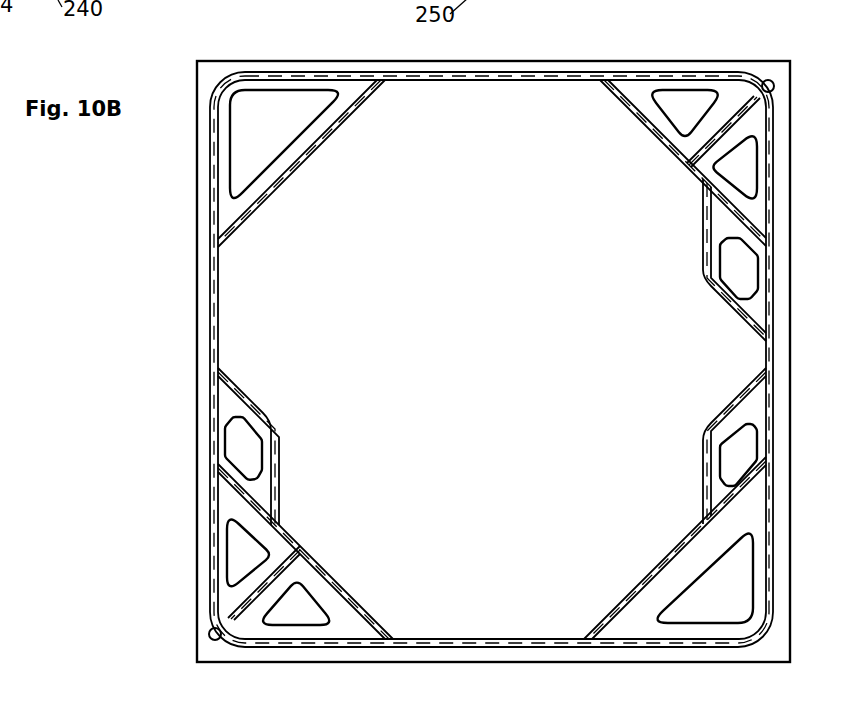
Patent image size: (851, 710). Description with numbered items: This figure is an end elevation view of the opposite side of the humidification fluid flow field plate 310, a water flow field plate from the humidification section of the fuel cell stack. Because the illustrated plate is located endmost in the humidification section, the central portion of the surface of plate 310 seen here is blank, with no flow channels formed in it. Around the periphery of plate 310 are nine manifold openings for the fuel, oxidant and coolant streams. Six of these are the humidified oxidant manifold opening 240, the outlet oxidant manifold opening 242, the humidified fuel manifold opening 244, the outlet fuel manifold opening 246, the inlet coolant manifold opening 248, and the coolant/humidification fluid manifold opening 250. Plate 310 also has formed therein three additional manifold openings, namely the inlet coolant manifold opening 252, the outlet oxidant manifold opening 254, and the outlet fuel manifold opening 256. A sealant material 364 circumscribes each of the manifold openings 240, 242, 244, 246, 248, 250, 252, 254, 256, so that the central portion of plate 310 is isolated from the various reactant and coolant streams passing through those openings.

The humidification fluid flow field plate 310 is at (732, 68).
The sealant material 364 is at (318, 72).
The humidified oxidant manifold opening 240 is at (692, 615).
The outlet oxidant manifold opening 242 is at (245, 147).
The humidified fuel manifold opening 244 is at (237, 552).
The outlet fuel manifold opening 246 is at (682, 110).
The inlet coolant manifold opening 248 is at (750, 142).
The coolant/humidification fluid manifold opening 250 is at (274, 614).
The inlet coolant manifold opening 252 is at (748, 281).
The outlet oxidant manifold opening 254 is at (748, 450).
The outlet fuel manifold opening 256 is at (237, 440).